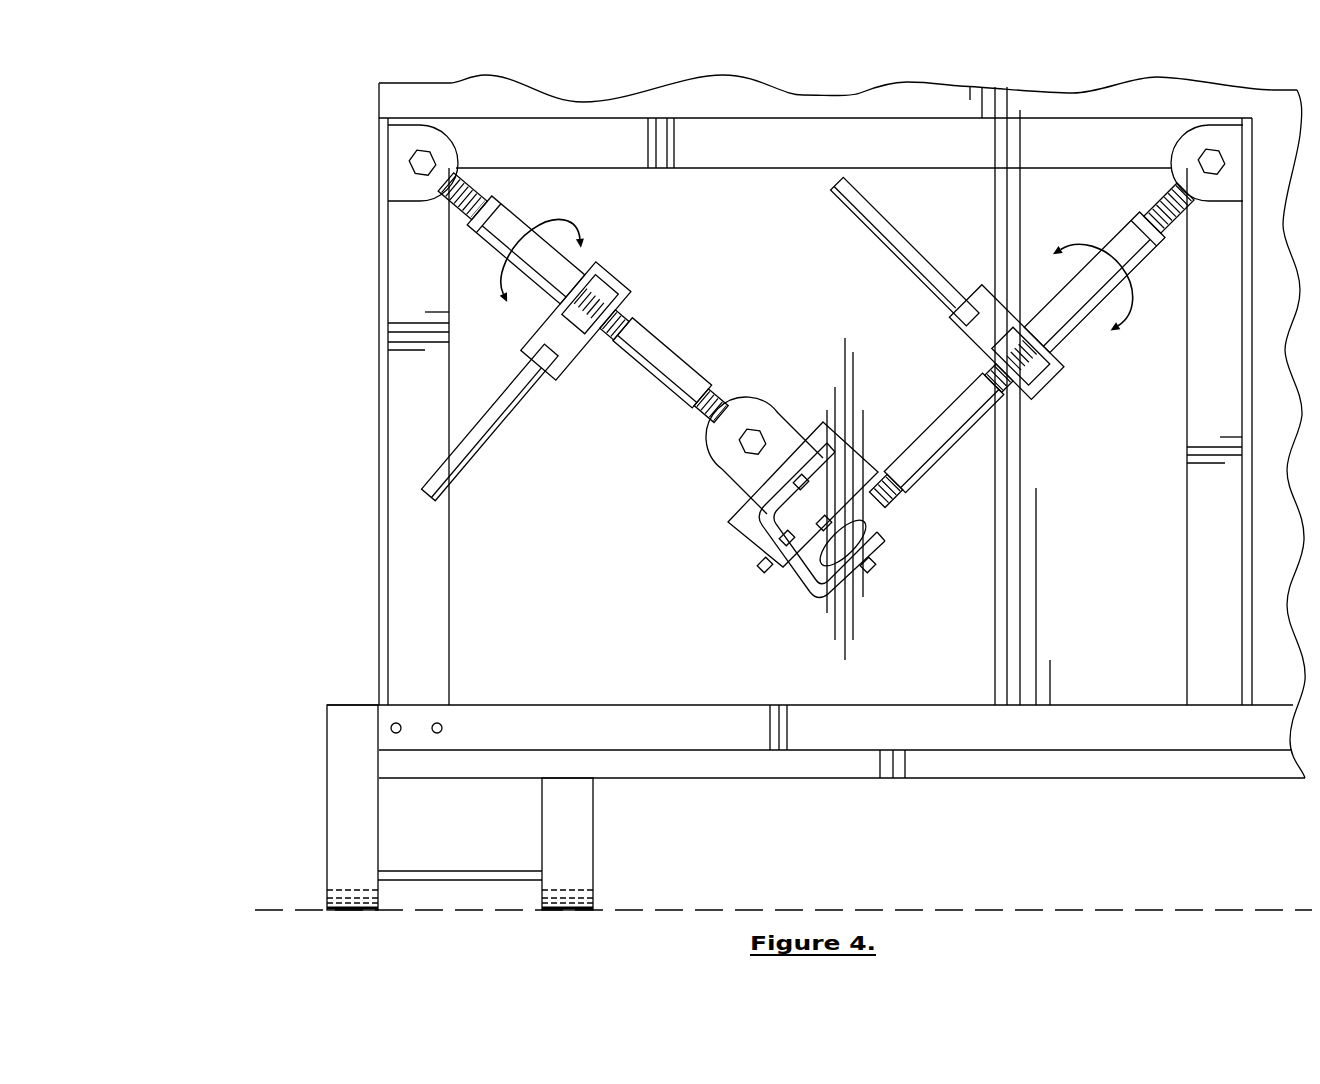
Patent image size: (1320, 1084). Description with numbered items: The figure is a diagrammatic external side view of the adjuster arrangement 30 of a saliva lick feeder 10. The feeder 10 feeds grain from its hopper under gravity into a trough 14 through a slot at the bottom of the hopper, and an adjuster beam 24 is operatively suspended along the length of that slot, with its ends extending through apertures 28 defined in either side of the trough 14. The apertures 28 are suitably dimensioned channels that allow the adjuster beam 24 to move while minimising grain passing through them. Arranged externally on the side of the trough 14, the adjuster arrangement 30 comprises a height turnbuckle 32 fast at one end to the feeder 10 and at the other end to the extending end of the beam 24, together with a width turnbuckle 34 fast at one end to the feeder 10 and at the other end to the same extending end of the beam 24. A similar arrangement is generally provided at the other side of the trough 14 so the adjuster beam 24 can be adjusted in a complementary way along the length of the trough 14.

The saliva lick feeder 10 is at (340, 732).
The trough 14 is at (570, 563).
The adjuster beam 24 is at (763, 523).
The aperture 28 is at (844, 462).
The adjuster arrangement 30 is at (337, 213).
The height turnbuckle 32 is at (943, 452).
The width turnbuckle 34 is at (547, 293).